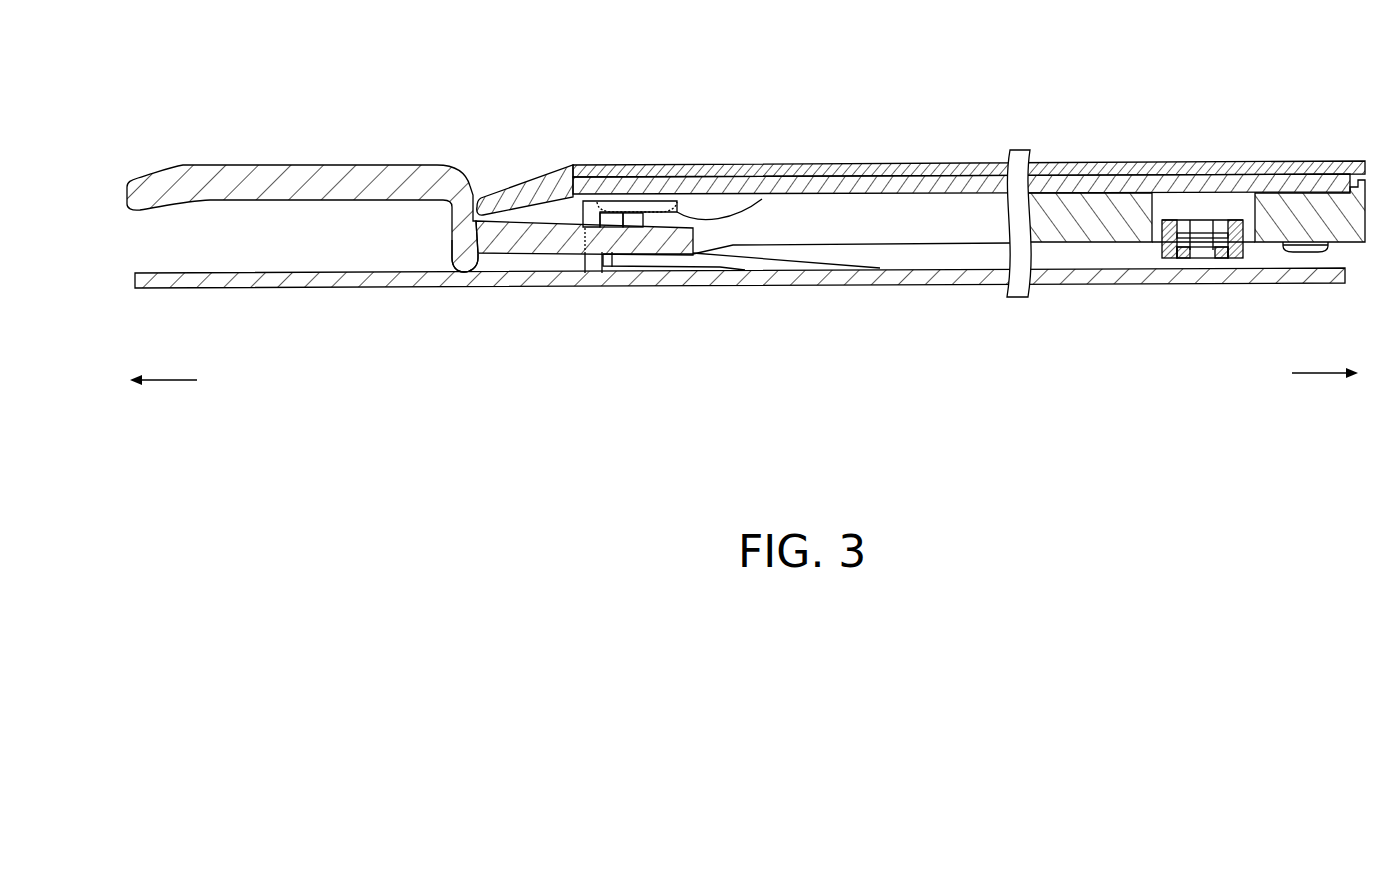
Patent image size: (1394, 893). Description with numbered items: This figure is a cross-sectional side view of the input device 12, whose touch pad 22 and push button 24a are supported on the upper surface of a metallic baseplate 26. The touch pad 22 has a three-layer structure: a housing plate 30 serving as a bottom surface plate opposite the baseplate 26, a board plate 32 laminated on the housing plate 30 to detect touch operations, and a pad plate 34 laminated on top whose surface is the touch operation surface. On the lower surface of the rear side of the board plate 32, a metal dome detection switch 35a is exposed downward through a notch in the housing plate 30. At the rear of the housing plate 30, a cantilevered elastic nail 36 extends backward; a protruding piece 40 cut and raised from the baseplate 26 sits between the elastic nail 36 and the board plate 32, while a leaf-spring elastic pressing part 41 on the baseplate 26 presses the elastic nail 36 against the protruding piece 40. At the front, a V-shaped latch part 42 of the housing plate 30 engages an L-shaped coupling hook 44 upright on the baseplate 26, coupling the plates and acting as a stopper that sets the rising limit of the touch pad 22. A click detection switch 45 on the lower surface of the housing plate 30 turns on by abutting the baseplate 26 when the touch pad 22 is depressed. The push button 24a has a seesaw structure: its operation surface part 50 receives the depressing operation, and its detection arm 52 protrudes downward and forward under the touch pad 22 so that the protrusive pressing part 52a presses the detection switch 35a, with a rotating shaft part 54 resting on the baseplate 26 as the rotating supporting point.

The input device 12 is at (182, 70).
The push button 24a is at (266, 161).
The operation surface part 50 is at (371, 163).
The detection arm 52 is at (525, 253).
The protrusive pressing part 52a is at (628, 198).
The protruding piece 40 is at (683, 199).
The touch pad 22 is at (846, 158).
The housing plate 30 is at (945, 195).
The board plate 32 is at (1068, 163).
The pad plate 34 is at (1134, 163).
The coupling hook 44 is at (1219, 220).
The latch part 42 is at (1175, 259).
The click detection switch 45 is at (1302, 254).
The baseplate 26 is at (359, 294).
The rotating shaft part 54 is at (462, 266).
The detection switch 35a is at (578, 222).
The elastic pressing part 41 is at (652, 264).
The elastic nail 36 is at (717, 243).